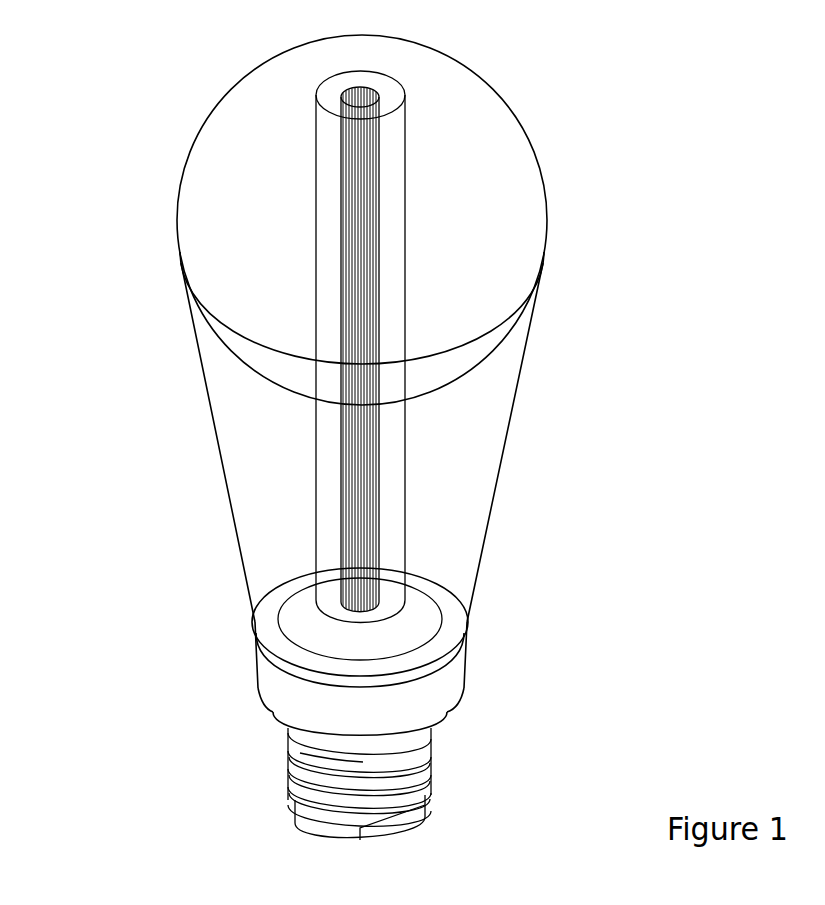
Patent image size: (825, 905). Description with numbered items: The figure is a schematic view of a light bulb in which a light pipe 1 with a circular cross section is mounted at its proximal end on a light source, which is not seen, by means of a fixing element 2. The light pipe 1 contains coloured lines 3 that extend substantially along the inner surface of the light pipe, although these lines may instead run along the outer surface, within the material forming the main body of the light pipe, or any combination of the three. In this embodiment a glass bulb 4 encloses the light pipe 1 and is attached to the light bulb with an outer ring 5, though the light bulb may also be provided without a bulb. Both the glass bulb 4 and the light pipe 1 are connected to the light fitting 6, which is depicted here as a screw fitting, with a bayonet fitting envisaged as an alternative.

The light pipe 1 is at (325, 223).
The fixing element 2 is at (293, 617).
The coloured lines 3 is at (382, 160).
The glass bulb 4 is at (503, 437).
The outer ring 5 is at (455, 672).
The light fitting 6 is at (432, 783).